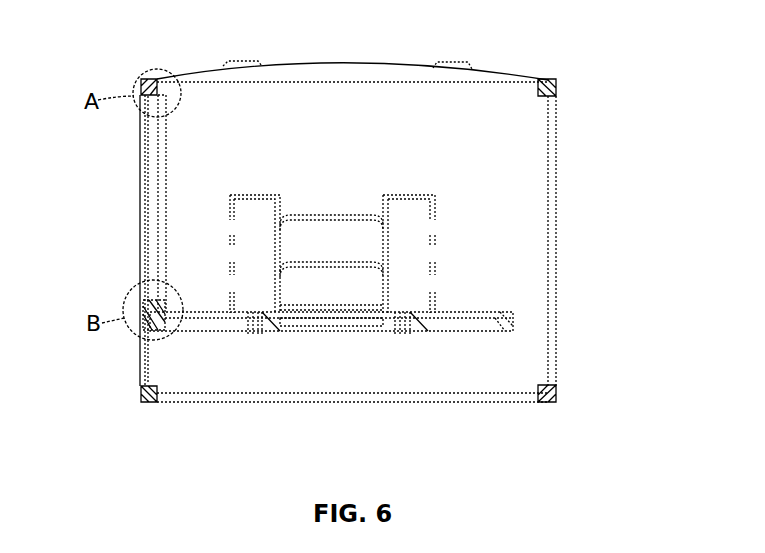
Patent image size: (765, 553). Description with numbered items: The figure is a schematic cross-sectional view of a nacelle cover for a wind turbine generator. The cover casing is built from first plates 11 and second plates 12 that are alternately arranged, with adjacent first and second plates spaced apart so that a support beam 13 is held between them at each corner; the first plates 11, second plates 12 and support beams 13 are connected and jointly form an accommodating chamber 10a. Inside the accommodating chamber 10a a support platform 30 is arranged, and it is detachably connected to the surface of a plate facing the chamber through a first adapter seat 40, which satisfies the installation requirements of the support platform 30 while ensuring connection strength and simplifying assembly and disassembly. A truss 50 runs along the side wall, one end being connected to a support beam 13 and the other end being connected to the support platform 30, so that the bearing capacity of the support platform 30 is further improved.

The accommodating chamber 10a is at (533, 270).
The first plate 11 is at (338, 62).
The second plate 12 is at (131, 202).
The support beam 13 is at (149, 79).
The support platform 30 is at (513, 322).
The first adapter seat 40 is at (150, 302).
The truss 50 is at (160, 240).